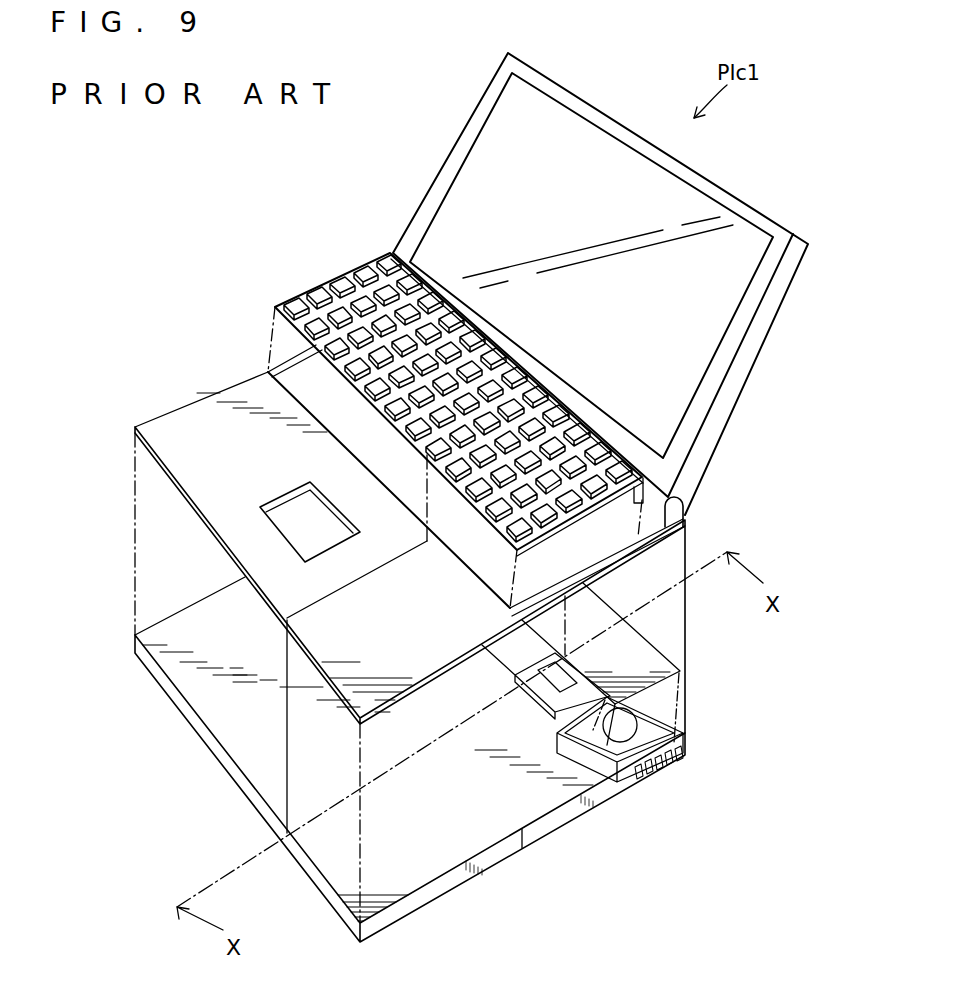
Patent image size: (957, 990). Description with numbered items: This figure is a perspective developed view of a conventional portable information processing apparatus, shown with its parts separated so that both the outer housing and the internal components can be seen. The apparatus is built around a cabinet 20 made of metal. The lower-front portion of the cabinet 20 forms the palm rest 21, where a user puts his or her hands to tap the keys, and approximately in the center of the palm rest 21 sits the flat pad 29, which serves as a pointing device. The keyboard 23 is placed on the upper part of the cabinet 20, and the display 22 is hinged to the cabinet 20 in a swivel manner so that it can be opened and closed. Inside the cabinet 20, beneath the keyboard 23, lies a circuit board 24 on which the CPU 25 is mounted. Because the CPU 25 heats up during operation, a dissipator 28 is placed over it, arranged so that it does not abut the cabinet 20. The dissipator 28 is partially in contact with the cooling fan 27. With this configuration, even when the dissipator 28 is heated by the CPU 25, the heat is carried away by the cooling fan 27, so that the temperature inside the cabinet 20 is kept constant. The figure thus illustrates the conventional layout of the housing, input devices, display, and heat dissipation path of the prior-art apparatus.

The cabinet 20 is at (223, 390).
The palm rest 21 is at (253, 463).
The display 22 is at (452, 151).
The keyboard 23 is at (347, 273).
The circuit board 24 is at (542, 787).
The CPU 25 is at (597, 670).
The cooling fan 27 is at (653, 770).
The dissipator 28 is at (595, 615).
The flat pad 29 is at (293, 520).